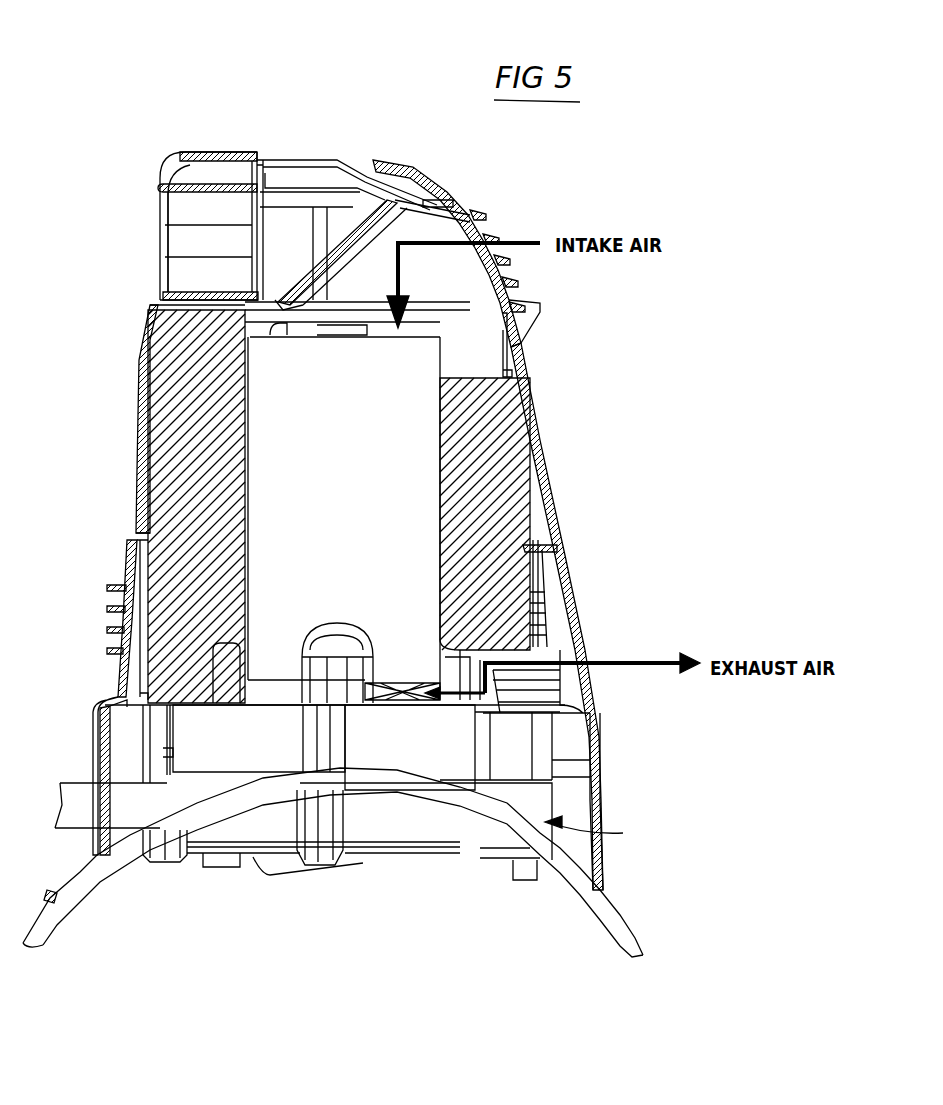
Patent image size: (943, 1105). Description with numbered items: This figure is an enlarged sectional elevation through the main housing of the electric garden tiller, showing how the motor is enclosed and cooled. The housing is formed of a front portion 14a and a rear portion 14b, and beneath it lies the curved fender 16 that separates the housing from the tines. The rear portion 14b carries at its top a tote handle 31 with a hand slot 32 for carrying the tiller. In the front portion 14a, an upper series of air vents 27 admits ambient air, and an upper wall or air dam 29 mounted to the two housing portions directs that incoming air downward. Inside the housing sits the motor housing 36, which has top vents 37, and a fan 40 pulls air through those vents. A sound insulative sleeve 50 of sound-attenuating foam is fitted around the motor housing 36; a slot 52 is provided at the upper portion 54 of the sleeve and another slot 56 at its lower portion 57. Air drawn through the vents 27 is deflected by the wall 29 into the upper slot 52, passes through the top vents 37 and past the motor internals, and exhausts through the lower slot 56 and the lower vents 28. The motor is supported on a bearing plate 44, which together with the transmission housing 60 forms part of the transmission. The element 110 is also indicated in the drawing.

The front portion 14a is at (555, 492).
The rear portion 14b is at (137, 435).
The curved fender 16 is at (615, 913).
The air vents 27 is at (473, 216).
The lower vents 28 is at (545, 650).
The air dam 29 is at (350, 258).
The tote handle 31 is at (190, 150).
The hand slot 32 is at (185, 232).
The motor housing 36 is at (344, 520).
The top vents 37 is at (280, 330).
The fan 40 is at (395, 700).
The bearing plate 44 is at (630, 752).
The sound insulative sleeve 50 is at (175, 380).
The slot 52 is at (455, 378).
The upper portion 54 is at (200, 318).
The slot 56 is at (455, 657).
The lower portion 57 is at (165, 677).
The transmission housing 60 is at (599, 838).
The bracket 110 is at (540, 805).